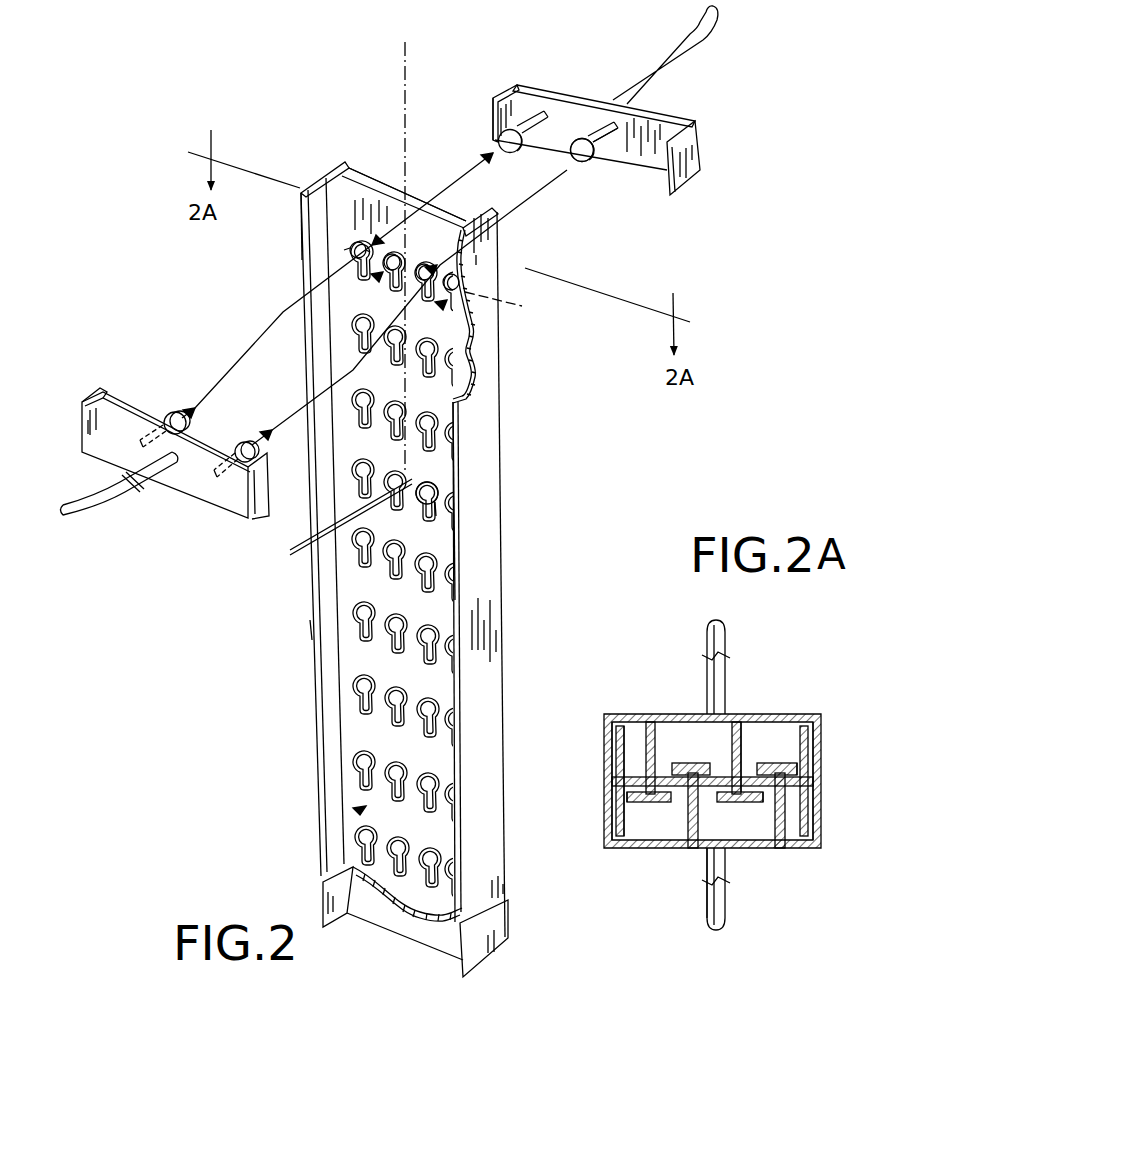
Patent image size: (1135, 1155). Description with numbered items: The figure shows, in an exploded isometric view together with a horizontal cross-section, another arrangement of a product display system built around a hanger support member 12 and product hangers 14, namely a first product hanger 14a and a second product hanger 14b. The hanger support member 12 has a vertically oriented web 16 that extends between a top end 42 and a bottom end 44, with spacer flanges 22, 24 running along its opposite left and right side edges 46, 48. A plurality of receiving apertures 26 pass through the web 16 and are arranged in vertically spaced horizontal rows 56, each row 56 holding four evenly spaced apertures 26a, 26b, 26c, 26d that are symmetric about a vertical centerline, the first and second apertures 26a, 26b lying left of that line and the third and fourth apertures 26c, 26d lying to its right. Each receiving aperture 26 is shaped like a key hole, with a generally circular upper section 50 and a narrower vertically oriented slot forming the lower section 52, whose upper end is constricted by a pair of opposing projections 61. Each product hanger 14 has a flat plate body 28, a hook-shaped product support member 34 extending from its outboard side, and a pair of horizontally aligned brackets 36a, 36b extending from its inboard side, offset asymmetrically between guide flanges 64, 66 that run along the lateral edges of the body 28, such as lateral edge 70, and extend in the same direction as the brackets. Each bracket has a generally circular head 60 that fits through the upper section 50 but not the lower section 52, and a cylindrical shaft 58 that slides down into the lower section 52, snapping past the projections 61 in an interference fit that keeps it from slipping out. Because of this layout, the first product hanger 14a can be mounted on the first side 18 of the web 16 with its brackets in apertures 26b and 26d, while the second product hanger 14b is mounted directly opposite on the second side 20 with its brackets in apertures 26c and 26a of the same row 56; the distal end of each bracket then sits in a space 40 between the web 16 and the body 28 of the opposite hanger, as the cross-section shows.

In FIG. 2, the hanger support member 12 is at (362, 808).
In FIG. 2A, the product hanger 14 is at (714, 798).
In FIG. 2, the first product hanger 14a is at (167, 490).
In FIG. 2, the second product hanger 14b is at (599, 136).
In FIG. 2, the web 16 is at (362, 733).
In FIG. 2, the first side 18 is at (324, 190).
In FIG. 2, the second side 20 is at (350, 165).
In FIG. 2, the spacer flange 22 is at (328, 711).
In FIG. 2A, the spacer flange 22 is at (612, 735).
In FIG. 2, the spacer flange 24 is at (484, 712).
In FIG. 2A, the spacer flange 24 is at (823, 750).
In FIG. 2, the receiving aperture 26 is at (433, 483).
In FIG. 2, the first receiving aperture 26a is at (345, 256).
In FIG. 2A, the first receiving aperture 26a is at (612, 795).
In FIG. 2, the second receiving aperture 26b is at (382, 268).
In FIG. 2A, the second receiving aperture 26b is at (668, 797).
In FIG. 2, the third receiving aperture 26c is at (442, 287).
In FIG. 2A, the third receiving aperture 26c is at (815, 840).
In FIG. 2, the fourth receiving aperture 26d is at (452, 292).
In FIG. 2A, the fourth receiving aperture 26d is at (815, 800).
In FIG. 2, the body 28 is at (655, 162).
In FIG. 2A, the body 28 is at (783, 715).
In FIG. 2, the product support member 34 is at (693, 53).
In FIG. 2A, the product support member 34 is at (730, 640).
In FIG. 2, the bracket 36a is at (590, 138).
In FIG. 2A, the bracket 36a is at (740, 735).
In FIG. 2, the bracket 36b is at (522, 132).
In FIG. 2A, the bracket 36b is at (652, 725).
In FIG. 2A, the space 40 is at (696, 756).
In FIG. 2, the top end 42 is at (385, 196).
In FIG. 2, the bottom end 44 is at (395, 913).
In FIG. 2, the left side edge 46 is at (340, 658).
In FIG. 2A, the left side edge 46 is at (612, 770).
In FIG. 2, the right side edge 48 is at (470, 240).
In FIG. 2A, the right side edge 48 is at (822, 780).
In FIG. 2, the upper section 50 is at (425, 505).
In FIG. 2, the lower section 52 is at (423, 520).
In FIG. 2, the row 56 is at (515, 305).
In FIG. 2, the shaft 58 is at (610, 160).
In FIG. 2A, the shaft 58 is at (745, 750).
In FIG. 2, the head 60 is at (580, 163).
In FIG. 2A, the head 60 is at (720, 805).
In FIG. 2, the projections 61 is at (300, 550).
In FIG. 2, the guide flange 64 is at (700, 150).
In FIG. 2A, the guide flange 64 is at (820, 745).
In FIG. 2, the guide flange 66 is at (500, 97).
In FIG. 2A, the guide flange 66 is at (618, 735).
In FIG. 2, the lateral edge 70 is at (497, 120).